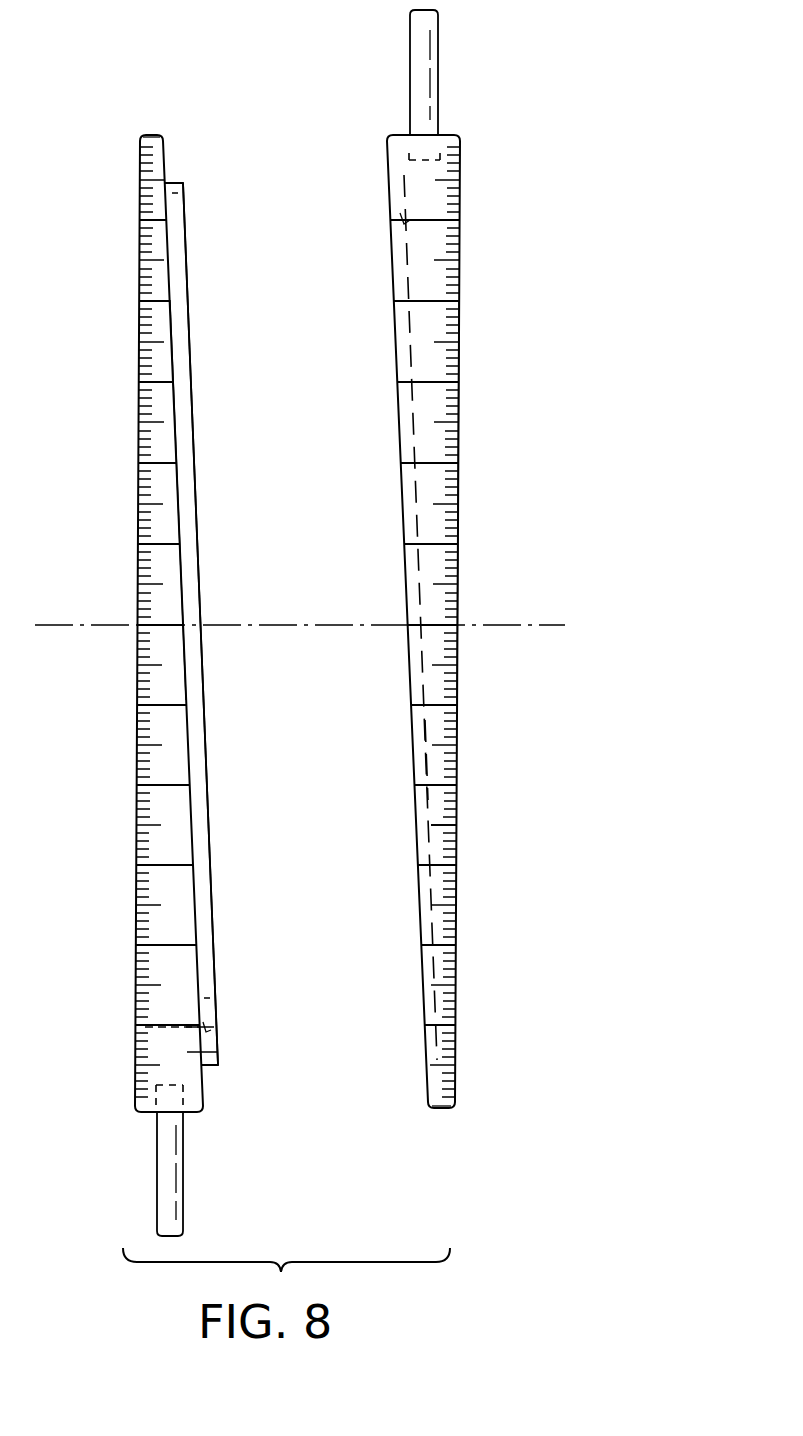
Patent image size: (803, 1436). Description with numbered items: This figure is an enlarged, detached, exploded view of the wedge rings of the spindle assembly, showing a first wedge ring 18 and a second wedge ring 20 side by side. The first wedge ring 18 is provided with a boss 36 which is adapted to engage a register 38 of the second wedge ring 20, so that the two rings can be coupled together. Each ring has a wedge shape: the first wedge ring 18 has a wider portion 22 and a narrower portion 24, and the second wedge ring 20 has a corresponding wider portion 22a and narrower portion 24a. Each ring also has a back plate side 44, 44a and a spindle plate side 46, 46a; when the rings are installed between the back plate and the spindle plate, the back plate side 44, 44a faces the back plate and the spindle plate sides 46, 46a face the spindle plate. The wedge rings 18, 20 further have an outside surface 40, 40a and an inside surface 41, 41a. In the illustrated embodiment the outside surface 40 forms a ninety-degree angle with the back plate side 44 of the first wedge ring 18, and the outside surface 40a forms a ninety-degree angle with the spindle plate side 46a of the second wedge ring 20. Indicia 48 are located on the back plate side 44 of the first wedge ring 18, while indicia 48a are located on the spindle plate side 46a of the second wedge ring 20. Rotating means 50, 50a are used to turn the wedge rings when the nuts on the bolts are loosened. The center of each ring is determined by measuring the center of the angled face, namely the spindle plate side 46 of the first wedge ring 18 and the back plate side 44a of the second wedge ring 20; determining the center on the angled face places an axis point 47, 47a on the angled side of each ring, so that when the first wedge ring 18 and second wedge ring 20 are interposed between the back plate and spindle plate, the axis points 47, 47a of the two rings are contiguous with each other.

The first wedge ring 18 is at (137, 693).
The second wedge ring 20 is at (457, 685).
The wider portion 22 is at (140, 1112).
The wider portion 22a is at (455, 135).
The narrower portion 24 is at (148, 135).
The narrower portion 24a is at (440, 1110).
The boss 36 is at (200, 740).
The register 38 is at (405, 410).
The outside surface 40 is at (168, 355).
The outside surface 40a is at (420, 752).
The inside surface 41 is at (215, 1022).
The inside surface 41a is at (408, 216).
The back plate side 44 is at (140, 518).
The back plate side 44a is at (400, 455).
The spindle plate side 46 is at (182, 578).
The spindle plate side 46a is at (457, 498).
The axis point 47 is at (184, 628).
The axis point 47a is at (408, 625).
The indicia 48 is at (145, 385).
The indicia 48a is at (450, 822).
The rotating means 50 is at (172, 1183).
The rotating means 50a is at (420, 70).